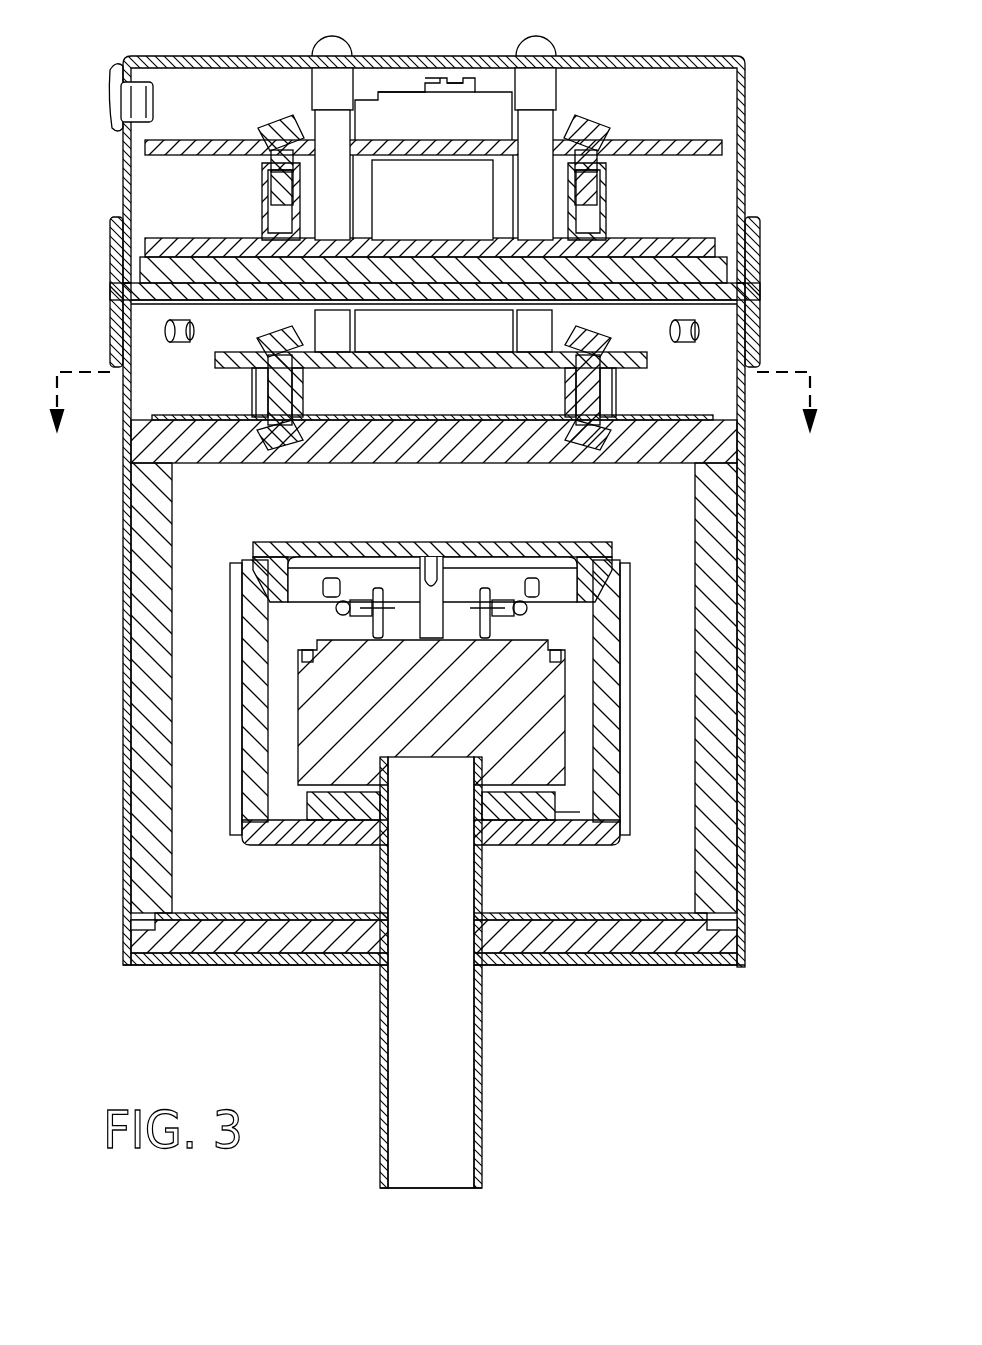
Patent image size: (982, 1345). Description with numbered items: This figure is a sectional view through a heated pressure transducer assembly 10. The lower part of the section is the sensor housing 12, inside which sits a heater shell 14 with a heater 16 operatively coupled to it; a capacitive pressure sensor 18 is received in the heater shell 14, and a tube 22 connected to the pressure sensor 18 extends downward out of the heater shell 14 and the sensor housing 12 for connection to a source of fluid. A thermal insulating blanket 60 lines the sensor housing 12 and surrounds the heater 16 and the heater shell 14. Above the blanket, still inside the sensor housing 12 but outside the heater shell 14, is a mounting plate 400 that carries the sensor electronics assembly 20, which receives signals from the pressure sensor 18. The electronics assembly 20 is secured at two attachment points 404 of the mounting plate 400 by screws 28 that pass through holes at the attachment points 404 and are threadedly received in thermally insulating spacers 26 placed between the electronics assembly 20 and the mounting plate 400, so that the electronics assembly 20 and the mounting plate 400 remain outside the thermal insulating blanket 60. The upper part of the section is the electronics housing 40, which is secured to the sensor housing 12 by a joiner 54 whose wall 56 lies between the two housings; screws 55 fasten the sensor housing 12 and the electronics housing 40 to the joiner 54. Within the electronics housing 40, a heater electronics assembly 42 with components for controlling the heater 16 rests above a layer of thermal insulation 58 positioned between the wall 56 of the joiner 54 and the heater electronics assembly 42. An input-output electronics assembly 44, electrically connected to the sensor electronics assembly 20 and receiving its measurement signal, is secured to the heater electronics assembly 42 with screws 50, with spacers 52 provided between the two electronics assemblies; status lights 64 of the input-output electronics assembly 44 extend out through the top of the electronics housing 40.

The heated pressure transducer assembly 10 is at (849, 212).
The sensor housing 12 is at (746, 735).
The heater shell 14 is at (272, 835).
The heater 16 is at (240, 713).
The capacitive pressure sensor 18 is at (560, 714).
The electronics assembly 20 is at (228, 366).
The tube 22 is at (483, 1068).
The thermally insulating spacers 26 is at (252, 400).
The screws 28 is at (272, 333).
The electronics housing 40 is at (747, 123).
The heater electronics assembly 42 is at (650, 240).
The input-output electronics assembly 44 is at (654, 141).
The screws 50 is at (268, 126).
The spacers 52 is at (262, 205).
The joiner 54 is at (761, 286).
The screws 55 is at (180, 345).
The wall 56 is at (745, 317).
The layer of thermal insulation 58 is at (143, 280).
The thermal insulating blanket 60 is at (434, 648).
The status lights 64 is at (333, 50).
The mounting plate 400 is at (668, 421).
The attachment point 404 is at (300, 400).